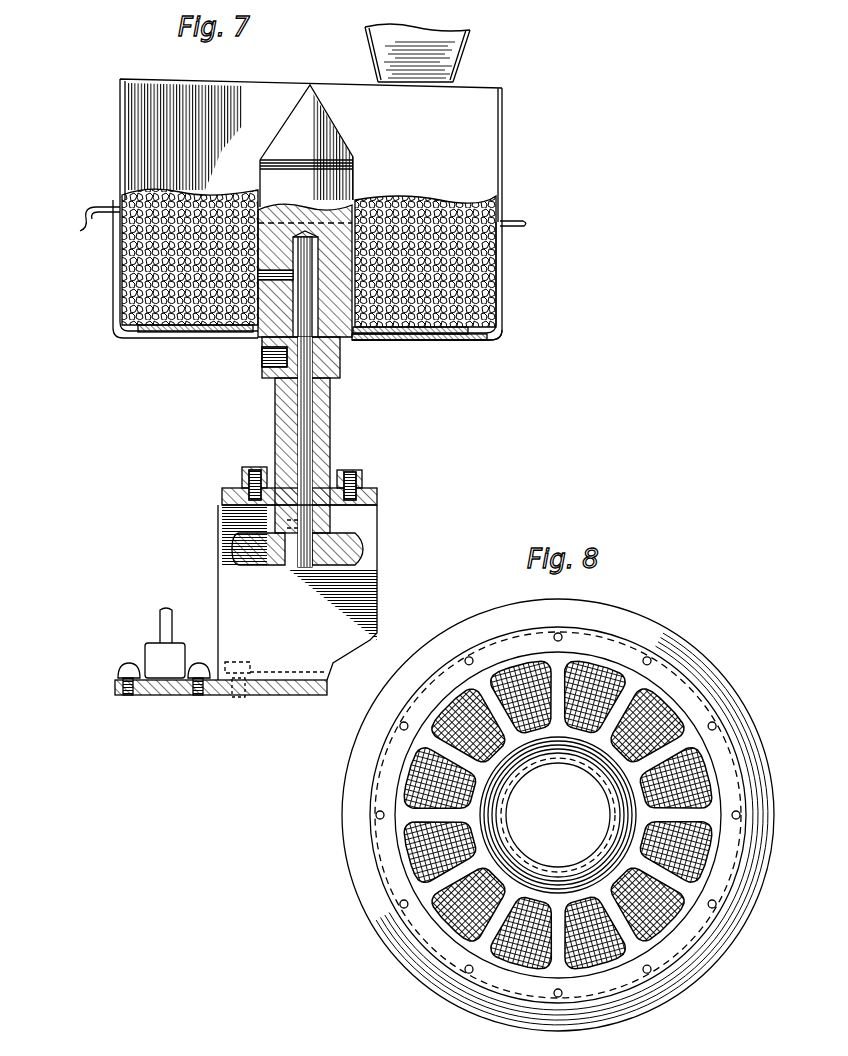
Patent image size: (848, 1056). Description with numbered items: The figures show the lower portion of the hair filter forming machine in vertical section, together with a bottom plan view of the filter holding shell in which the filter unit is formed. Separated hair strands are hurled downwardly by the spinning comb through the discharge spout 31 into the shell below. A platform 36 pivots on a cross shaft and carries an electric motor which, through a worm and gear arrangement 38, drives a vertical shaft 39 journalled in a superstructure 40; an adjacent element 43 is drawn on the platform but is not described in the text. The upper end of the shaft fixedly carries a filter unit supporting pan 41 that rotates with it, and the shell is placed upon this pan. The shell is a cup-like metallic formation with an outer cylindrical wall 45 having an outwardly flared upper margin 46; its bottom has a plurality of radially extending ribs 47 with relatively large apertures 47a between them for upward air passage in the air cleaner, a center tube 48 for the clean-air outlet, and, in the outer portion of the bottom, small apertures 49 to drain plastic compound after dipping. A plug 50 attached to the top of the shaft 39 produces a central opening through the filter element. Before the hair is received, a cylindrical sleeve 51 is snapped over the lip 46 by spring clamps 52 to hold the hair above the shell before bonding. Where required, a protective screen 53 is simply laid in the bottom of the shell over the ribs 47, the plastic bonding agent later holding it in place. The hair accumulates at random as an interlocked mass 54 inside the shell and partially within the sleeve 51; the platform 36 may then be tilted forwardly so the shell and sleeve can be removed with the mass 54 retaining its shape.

In FIG. 7, the discharge spout 31 is at (447, 60).
In FIG. 7, the platform 36 is at (265, 697).
In FIG. 7, the worm and gear arrangement 38 is at (233, 546).
In FIG. 7, the vertical shaft 39 is at (310, 423).
In FIG. 7, the superstructure 40 is at (228, 487).
In FIG. 7, the filter unit supporting pan 41 is at (462, 344).
In FIG. 7, the motor shaft 43 is at (160, 619).
In FIG. 7, the outer cylindrical wall 45 is at (498, 264).
In FIG. 7, the outwardly flared upper margin 46 is at (513, 222).
In FIG. 8, the outwardly flared upper margin 46 is at (347, 804).
In FIG. 7, the radially extending ribs 47 is at (388, 344).
In FIG. 8, the radially extending ribs 47 is at (693, 743).
In FIG. 7, the apertures 47a is at (420, 341).
In FIG. 8, the apertures 47a is at (585, 668).
In FIG. 7, the center tube 48 is at (357, 195).
In FIG. 8, the center tube 48 is at (513, 793).
In FIG. 8, the small apertures 49 is at (401, 900).
In FIG. 7, the plug 50 is at (327, 133).
In FIG. 7, the cylindrical sleeve 51 is at (502, 127).
In FIG. 7, the spring clamps 52 is at (90, 213).
In FIG. 7, the protective screen 53 is at (190, 324).
In FIG. 8, the protective screen 53 is at (423, 846).
In FIG. 7, the mass 54 is at (440, 197).